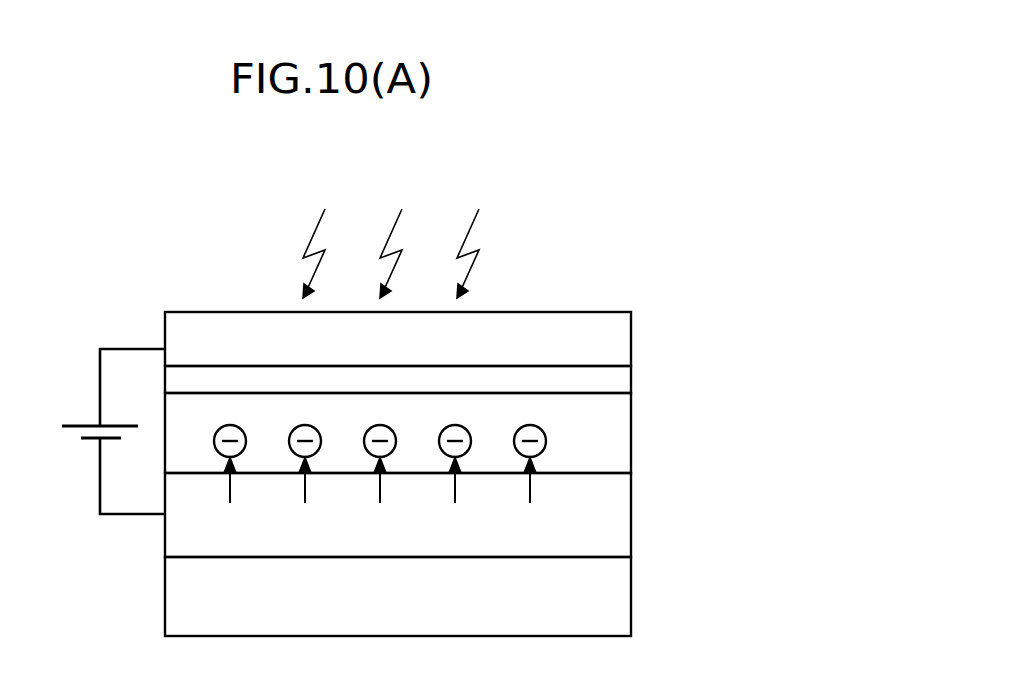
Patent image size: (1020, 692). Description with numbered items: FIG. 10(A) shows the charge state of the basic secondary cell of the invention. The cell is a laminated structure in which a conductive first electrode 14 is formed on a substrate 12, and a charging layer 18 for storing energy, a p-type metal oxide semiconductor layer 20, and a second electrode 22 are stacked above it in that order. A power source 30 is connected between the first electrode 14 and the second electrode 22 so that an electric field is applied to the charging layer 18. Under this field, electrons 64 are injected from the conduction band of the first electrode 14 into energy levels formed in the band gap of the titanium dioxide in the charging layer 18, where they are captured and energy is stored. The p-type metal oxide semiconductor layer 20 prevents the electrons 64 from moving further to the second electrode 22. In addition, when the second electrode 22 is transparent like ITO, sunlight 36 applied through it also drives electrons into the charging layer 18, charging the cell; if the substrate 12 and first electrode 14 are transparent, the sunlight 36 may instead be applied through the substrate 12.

The substrate 12 is at (604, 601).
The first electrode 14 is at (604, 521).
The charging layer 18 is at (606, 438).
The p-type metal oxide semiconductor layer 20 is at (606, 387).
The second electrode 22 is at (606, 342).
The power source 30 is at (94, 425).
The sunlight 36 is at (491, 210).
The electrons 64 is at (229, 424).